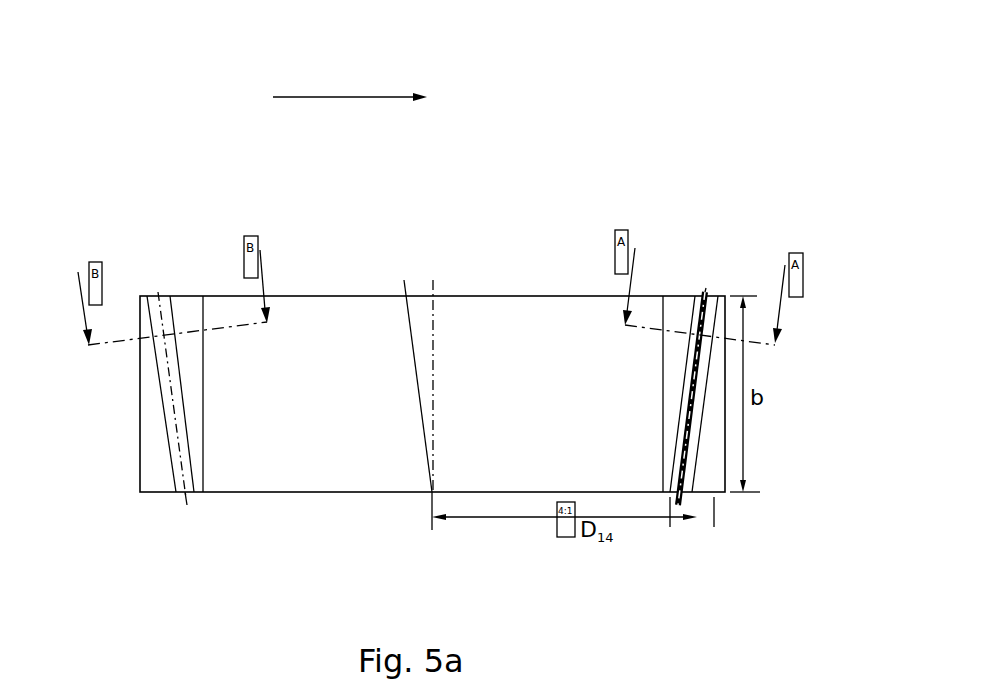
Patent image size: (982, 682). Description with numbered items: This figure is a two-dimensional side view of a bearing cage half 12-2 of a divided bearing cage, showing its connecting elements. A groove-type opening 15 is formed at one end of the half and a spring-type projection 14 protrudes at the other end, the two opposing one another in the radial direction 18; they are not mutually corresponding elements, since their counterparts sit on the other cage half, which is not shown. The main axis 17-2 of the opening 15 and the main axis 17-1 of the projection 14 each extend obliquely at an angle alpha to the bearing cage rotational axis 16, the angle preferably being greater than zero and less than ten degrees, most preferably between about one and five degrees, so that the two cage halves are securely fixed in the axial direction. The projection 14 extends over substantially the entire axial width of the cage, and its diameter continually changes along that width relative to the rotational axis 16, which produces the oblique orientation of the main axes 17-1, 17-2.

The bearing cage half 12-2 is at (582, 98).
The spring-type projection 14 is at (692, 487).
The groove-type opening 15 is at (178, 475).
The bearing cage rotational axis 16 is at (434, 337).
The main axis of the projection 17-1 is at (707, 285).
The main axis of the opening 17-2 is at (157, 288).
The radial direction 18 is at (367, 97).